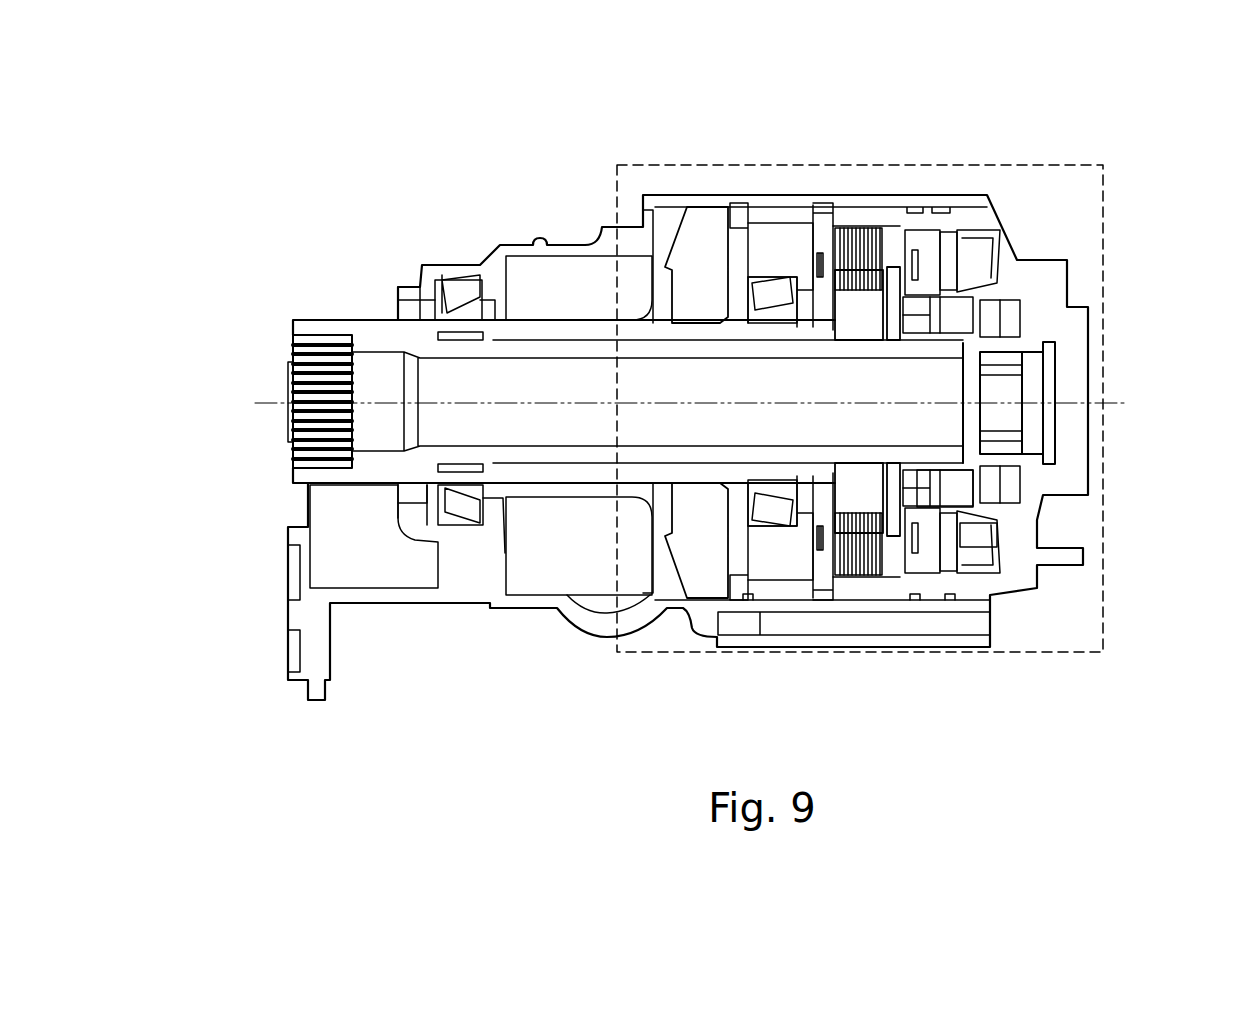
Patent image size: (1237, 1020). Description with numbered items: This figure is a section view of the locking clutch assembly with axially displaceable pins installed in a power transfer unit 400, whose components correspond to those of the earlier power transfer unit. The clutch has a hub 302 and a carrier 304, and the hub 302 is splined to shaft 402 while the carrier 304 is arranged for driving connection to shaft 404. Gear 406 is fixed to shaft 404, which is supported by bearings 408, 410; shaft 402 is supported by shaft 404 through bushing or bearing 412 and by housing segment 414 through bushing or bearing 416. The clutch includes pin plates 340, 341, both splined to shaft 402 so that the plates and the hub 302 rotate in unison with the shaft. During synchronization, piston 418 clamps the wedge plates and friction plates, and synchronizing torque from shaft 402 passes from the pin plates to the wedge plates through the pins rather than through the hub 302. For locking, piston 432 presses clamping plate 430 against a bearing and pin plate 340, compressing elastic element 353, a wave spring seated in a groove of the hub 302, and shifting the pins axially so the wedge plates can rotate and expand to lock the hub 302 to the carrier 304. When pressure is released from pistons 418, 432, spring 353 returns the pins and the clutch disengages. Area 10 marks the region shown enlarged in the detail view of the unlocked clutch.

The area 10 is at (1103, 523).
The power transfer unit 400 is at (474, 126).
The shaft 402 is at (372, 326).
The shaft 404 is at (452, 286).
The gear 406 is at (712, 215).
The bearing 408 is at (771, 270).
The bearing 410 is at (505, 320).
The bushing or bearing 412 is at (467, 337).
The housing segment 414 is at (1013, 318).
The bushing or bearing 416 is at (943, 350).
The piston 418 is at (937, 285).
The piston 432 is at (990, 300).
The hub 302 is at (877, 222).
The carrier 304 is at (853, 220).
The pin plate 340 is at (903, 533).
The pin plate 341 is at (807, 523).
The elastic element 353 is at (885, 527).
The clamping plate 430 is at (963, 520).